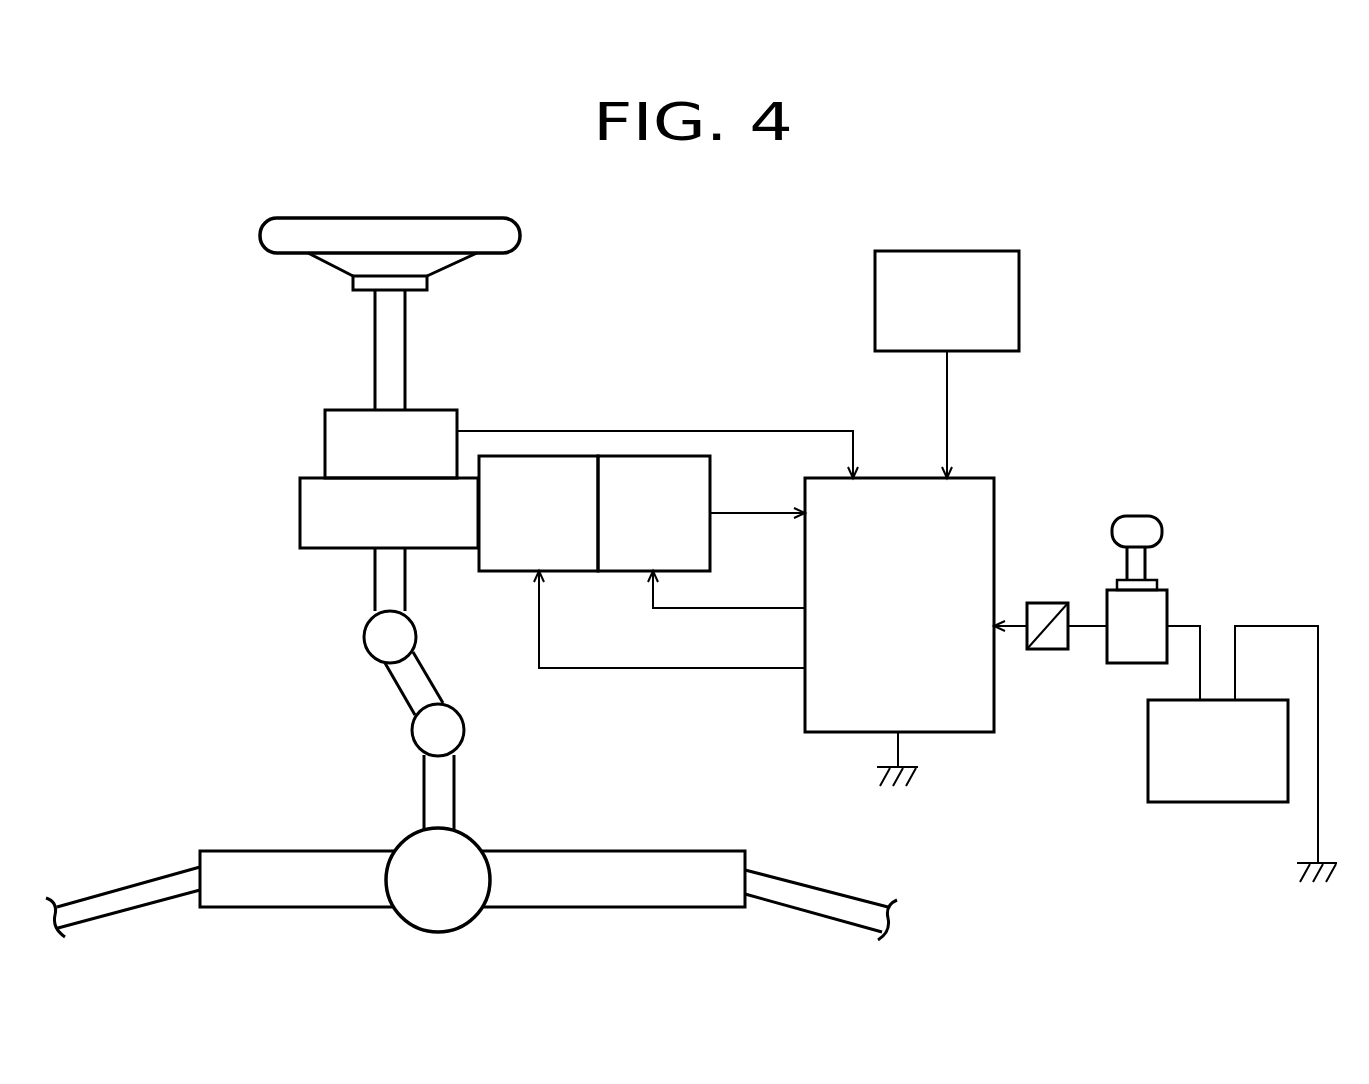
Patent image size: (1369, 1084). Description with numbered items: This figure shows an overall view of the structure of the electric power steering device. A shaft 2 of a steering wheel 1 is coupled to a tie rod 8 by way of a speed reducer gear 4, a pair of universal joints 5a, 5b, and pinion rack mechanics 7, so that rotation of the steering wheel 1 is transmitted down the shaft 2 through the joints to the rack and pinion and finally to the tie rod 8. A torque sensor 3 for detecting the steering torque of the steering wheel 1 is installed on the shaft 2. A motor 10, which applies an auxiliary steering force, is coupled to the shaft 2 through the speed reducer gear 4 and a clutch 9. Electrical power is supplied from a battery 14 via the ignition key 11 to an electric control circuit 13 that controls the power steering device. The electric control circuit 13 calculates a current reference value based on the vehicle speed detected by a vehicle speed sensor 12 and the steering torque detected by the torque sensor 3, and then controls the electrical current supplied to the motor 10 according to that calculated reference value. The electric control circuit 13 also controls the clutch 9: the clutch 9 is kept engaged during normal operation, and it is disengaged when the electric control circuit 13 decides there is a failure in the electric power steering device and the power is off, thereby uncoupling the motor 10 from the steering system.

The steering wheel 1 is at (520, 240).
The shaft 2 is at (375, 333).
The torque sensor 3 is at (325, 446).
The speed reducer gear 4 is at (300, 520).
The universal joint 5a is at (363, 637).
The universal joint 5b is at (412, 740).
The pinion rack mechanics 7 is at (480, 833).
The tie rod 8 is at (855, 897).
The clutch 9 is at (500, 571).
The motor 10 is at (623, 571).
The ignition key 11 is at (1162, 533).
The vehicle speed sensor 12 is at (1019, 299).
The electric control circuit 13 is at (988, 478).
The battery 14 is at (1207, 802).